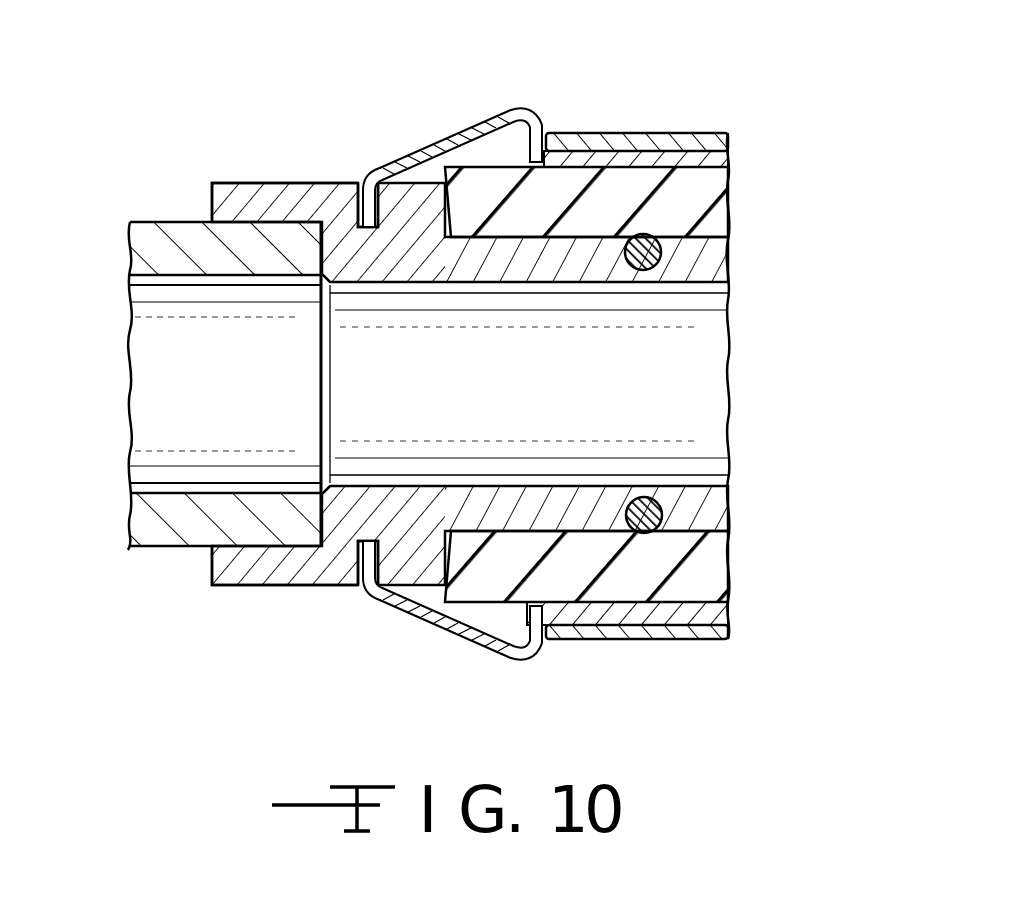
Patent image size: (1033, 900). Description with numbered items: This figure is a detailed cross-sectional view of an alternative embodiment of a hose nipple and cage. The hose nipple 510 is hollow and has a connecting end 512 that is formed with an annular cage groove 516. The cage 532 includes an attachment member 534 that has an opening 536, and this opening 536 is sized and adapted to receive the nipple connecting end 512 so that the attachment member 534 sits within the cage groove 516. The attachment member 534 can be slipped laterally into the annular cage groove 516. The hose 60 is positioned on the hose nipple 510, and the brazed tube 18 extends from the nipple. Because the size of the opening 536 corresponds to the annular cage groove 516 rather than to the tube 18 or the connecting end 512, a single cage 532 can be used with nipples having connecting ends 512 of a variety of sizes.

The brazed tube 18 is at (150, 553).
The hose 60 is at (708, 191).
The hose nipple 510 is at (718, 261).
The connecting end 512 is at (252, 183).
The annular cage groove 516 is at (360, 598).
The cage 532 is at (480, 124).
The attachment member 534 is at (362, 207).
The opening 536 is at (366, 546).